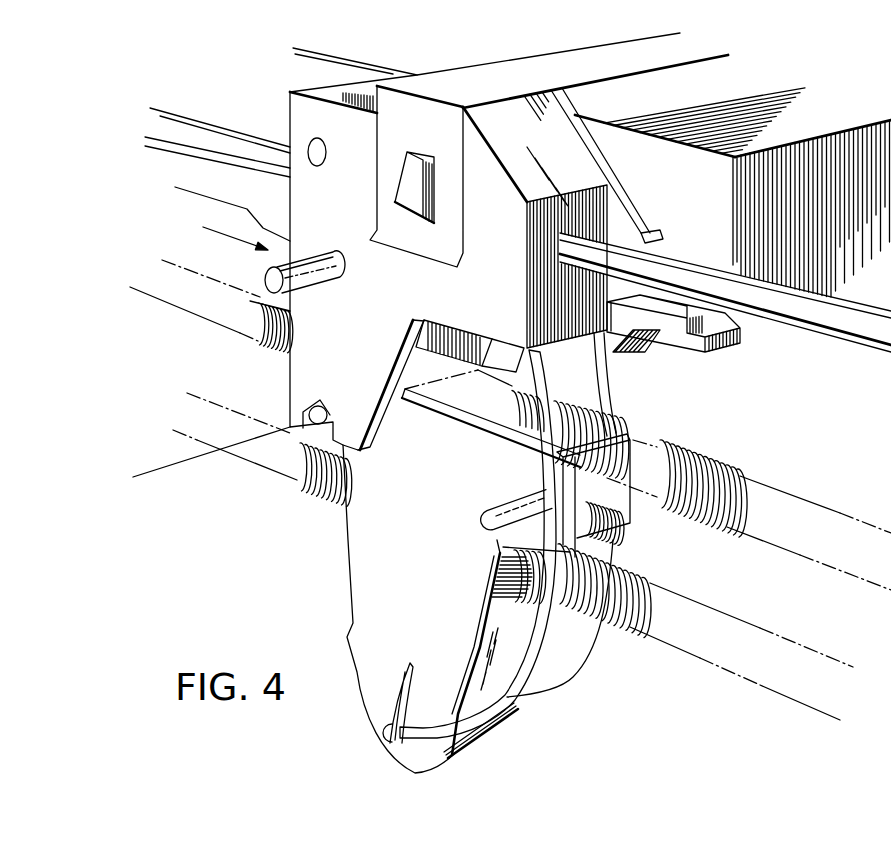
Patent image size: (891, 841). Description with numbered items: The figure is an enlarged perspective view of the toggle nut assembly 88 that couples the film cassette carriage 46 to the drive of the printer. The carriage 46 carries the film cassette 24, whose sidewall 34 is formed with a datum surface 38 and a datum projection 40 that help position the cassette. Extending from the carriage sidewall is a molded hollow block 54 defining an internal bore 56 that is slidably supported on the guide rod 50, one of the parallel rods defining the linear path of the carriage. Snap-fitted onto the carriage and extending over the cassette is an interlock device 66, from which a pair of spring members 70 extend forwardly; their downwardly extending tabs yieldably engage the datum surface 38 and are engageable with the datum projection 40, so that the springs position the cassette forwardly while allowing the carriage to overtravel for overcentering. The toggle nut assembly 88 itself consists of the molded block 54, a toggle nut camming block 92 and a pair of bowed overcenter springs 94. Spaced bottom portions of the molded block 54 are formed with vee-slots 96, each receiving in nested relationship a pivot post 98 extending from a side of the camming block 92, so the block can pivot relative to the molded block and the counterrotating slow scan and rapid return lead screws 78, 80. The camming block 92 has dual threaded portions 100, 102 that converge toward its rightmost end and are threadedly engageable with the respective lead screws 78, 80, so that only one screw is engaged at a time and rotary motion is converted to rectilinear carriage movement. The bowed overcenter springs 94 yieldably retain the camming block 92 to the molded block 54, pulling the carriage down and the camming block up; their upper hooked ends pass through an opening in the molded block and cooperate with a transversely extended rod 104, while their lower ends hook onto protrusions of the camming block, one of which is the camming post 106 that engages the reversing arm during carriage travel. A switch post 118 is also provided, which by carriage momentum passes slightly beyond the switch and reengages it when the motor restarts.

The film cassette 24 is at (853, 140).
The sidewall 34 is at (717, 167).
The datum surface 38 is at (636, 328).
The datum projection 40 is at (664, 240).
The film cassette carriage 46 is at (347, 71).
The guide rod 50 is at (853, 336).
The molded hollow block 54 is at (400, 288).
The internal bore 56 is at (560, 250).
The interlock device 66 is at (527, 70).
The spring member 70 is at (627, 203).
The slow scan lead screw 78 is at (576, 413).
The rapid return lead screw 80 is at (612, 620).
The toggle nut assembly 88 is at (265, 500).
The toggle nut camming block 92 is at (423, 768).
The bowed overcenter spring 94 is at (548, 683).
The vee-slot 96 is at (327, 412).
The pivot post 98 is at (319, 404).
The threaded portion 100 is at (618, 437).
The threaded portion 102 is at (617, 524).
The transversely extended rod 104 is at (316, 164).
The camming post 106 is at (490, 524).
The switch post 118 is at (265, 278).